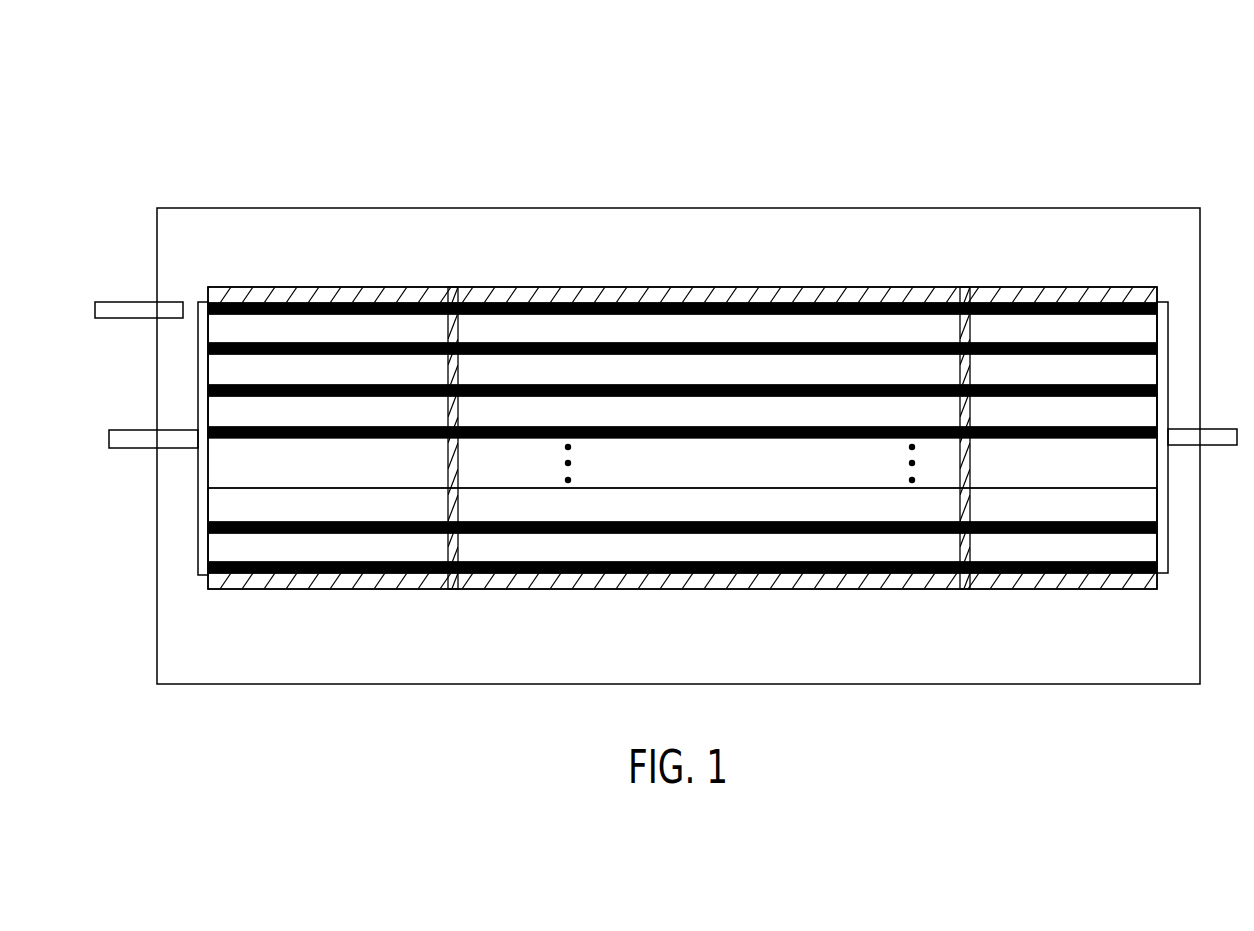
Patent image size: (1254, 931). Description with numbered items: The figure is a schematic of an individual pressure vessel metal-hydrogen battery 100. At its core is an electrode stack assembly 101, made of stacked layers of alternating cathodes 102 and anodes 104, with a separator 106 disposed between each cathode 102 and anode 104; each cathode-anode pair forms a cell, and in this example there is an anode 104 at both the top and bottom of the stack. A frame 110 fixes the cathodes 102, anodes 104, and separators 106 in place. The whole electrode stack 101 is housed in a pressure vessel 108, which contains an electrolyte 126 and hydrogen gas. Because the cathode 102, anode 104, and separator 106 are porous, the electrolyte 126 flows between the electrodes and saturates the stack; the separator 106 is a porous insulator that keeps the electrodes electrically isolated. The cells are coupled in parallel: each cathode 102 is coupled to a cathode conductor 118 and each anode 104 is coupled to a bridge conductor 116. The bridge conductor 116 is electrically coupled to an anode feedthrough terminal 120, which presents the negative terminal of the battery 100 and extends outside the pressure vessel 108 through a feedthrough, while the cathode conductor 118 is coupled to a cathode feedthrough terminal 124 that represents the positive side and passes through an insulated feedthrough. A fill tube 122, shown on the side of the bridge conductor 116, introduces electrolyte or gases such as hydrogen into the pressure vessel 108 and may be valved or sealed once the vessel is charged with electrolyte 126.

The metal-hydrogen battery 100 is at (462, 110).
The electrode stack assembly 101 is at (722, 477).
The cathode 102 is at (745, 370).
The anode 104 is at (623, 410).
The separator 106 is at (1015, 343).
The pressure vessel 108 is at (918, 208).
The frame 110 is at (772, 295).
The bridge conductor 116 is at (198, 545).
The cathode conductor 118 is at (1162, 573).
The anode feedthrough terminal 120 is at (130, 448).
The fill tube 122 is at (120, 302).
The cathode feedthrough terminal 124 is at (1215, 446).
The electrolyte 126 is at (805, 649).